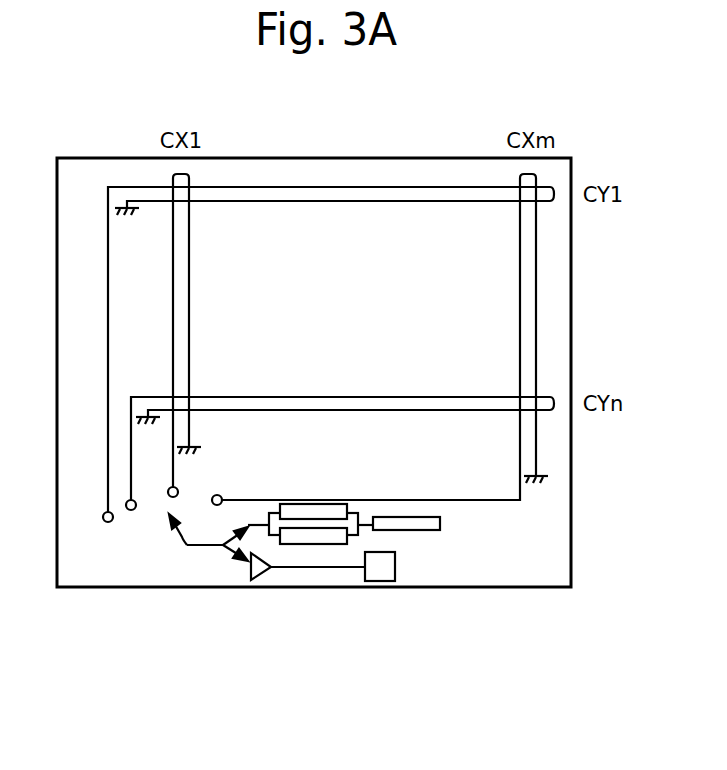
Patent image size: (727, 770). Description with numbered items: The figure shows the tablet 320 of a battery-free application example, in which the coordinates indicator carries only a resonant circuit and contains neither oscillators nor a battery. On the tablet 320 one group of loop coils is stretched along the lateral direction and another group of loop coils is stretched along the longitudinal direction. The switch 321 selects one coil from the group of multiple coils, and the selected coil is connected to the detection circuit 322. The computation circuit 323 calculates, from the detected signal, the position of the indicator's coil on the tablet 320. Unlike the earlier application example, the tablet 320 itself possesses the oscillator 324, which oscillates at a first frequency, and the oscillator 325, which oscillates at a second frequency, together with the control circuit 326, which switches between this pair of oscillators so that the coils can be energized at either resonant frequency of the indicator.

The tablet 320 is at (504, 590).
The switch 321 is at (187, 545).
The detection circuit 322 is at (268, 580).
The computation circuit 323 is at (383, 581).
The oscillator 324 is at (315, 512).
The oscillator 325 is at (322, 545).
The control circuit 326 is at (408, 517).